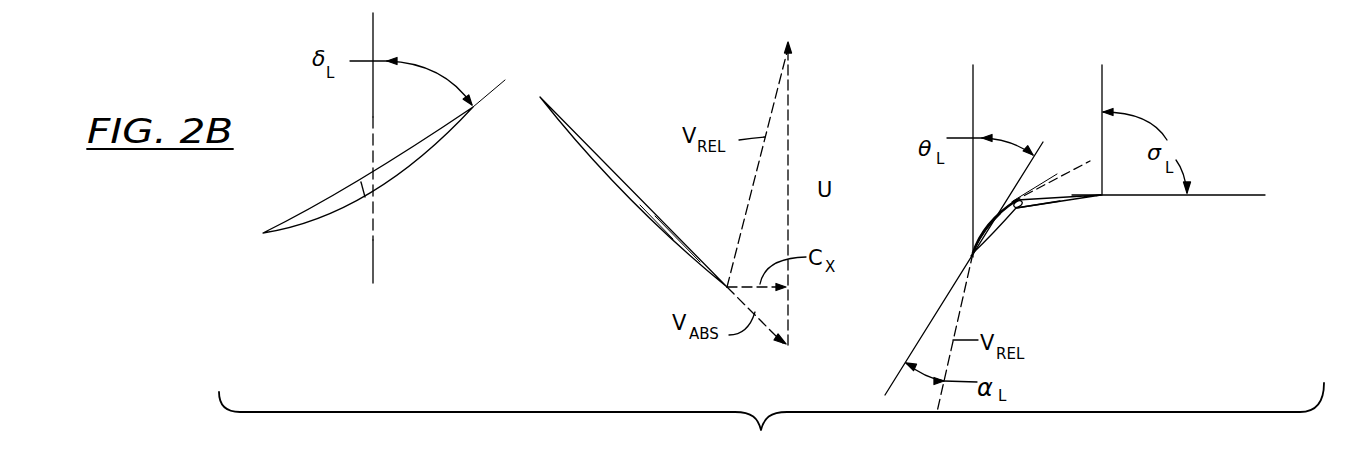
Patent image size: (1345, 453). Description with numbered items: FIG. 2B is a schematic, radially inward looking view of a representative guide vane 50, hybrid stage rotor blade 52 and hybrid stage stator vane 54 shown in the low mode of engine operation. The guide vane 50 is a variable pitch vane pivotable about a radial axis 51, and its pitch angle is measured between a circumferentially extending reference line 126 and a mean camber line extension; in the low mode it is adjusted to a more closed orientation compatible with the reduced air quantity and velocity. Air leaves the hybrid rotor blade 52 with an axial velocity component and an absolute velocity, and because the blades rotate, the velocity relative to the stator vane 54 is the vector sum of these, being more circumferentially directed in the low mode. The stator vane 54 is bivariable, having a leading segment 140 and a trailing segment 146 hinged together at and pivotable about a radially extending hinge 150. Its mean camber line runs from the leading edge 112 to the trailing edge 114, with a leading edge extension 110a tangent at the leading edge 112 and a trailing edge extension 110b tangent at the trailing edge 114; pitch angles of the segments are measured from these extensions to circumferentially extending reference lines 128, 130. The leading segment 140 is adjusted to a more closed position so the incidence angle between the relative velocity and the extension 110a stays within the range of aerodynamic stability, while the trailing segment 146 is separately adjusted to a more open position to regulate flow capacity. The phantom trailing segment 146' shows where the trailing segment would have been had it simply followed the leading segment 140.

The guide vane 50 is at (308, 212).
The radial axis 51 is at (363, 187).
The hybrid stage rotor blade 52 is at (568, 118).
The hybrid stage stator vane 54 is at (1050, 203).
The leading edge extension 110a is at (931, 322).
The trailing edge extension 110b is at (1235, 195).
The leading edge 112 is at (972, 265).
The trailing edge 114 is at (1102, 197).
The circumferentially extending reference line 126 is at (374, 245).
The circumferentially extending reference line 128 is at (973, 91).
The circumferentially extending reference line 130 is at (1103, 80).
The leading segment 140 is at (987, 227).
The trailing segment 146 is at (1057, 229).
The phantom trailing segment 146' is at (1044, 152).
The radially extending hinge 150 is at (1019, 209).